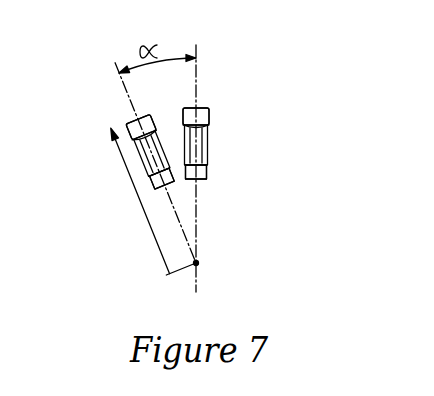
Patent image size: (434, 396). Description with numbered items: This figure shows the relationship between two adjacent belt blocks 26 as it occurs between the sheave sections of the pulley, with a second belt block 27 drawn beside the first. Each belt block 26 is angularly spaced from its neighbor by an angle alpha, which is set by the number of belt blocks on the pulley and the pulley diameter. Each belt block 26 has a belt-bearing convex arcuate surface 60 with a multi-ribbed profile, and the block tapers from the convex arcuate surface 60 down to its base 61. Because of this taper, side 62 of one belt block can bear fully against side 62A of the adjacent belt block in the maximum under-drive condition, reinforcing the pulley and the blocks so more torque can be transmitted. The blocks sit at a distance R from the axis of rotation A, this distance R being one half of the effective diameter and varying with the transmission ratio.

The belt block 26 is at (208, 112).
The second tool 27 is at (207, 150).
The convex arcuate surface 60 is at (138, 124).
The base 61 is at (148, 193).
The side 62 is at (135, 148).
The side 62A is at (157, 142).
The distance R is at (147, 221).
The axis of rotation A is at (196, 263).